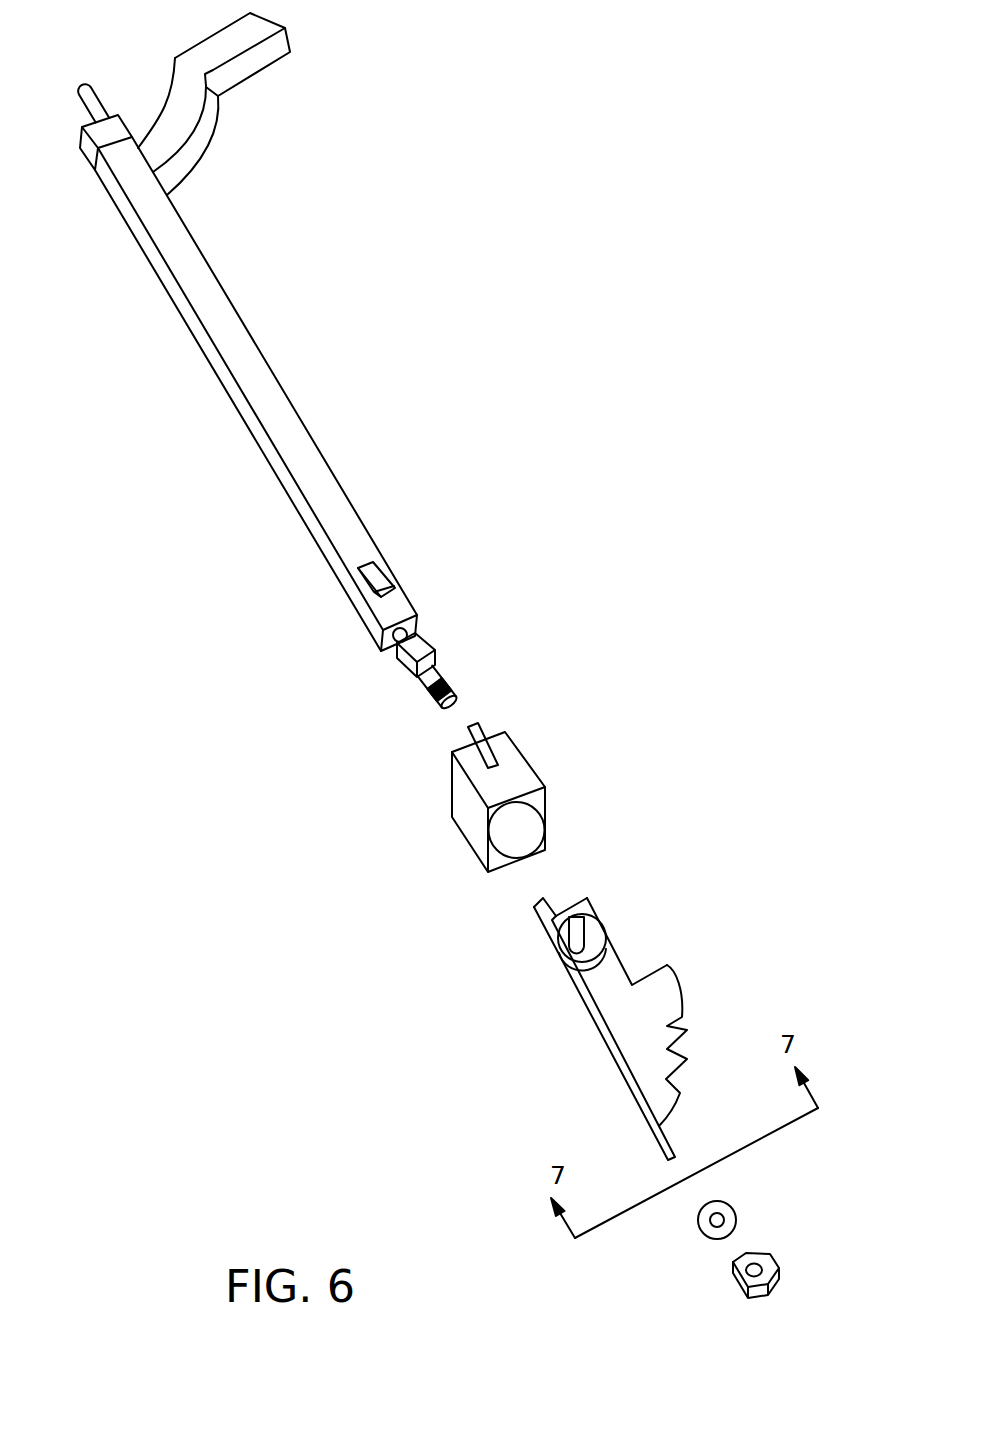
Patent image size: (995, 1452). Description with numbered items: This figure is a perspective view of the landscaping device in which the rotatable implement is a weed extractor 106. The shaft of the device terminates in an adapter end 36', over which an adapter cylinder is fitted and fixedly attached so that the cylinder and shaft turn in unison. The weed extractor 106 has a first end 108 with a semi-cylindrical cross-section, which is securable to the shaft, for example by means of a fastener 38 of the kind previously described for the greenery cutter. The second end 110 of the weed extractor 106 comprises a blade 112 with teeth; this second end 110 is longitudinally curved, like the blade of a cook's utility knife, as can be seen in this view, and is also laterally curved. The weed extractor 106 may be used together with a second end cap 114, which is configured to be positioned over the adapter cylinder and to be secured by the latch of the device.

The adapter end 36' is at (306, 362).
The second end cap 114 is at (482, 830).
The weed extractor 106 is at (652, 993).
The first end 108 is at (569, 912).
The second end 110 is at (675, 1157).
The blade 112 is at (683, 993).
The fastener 38 is at (800, 1271).